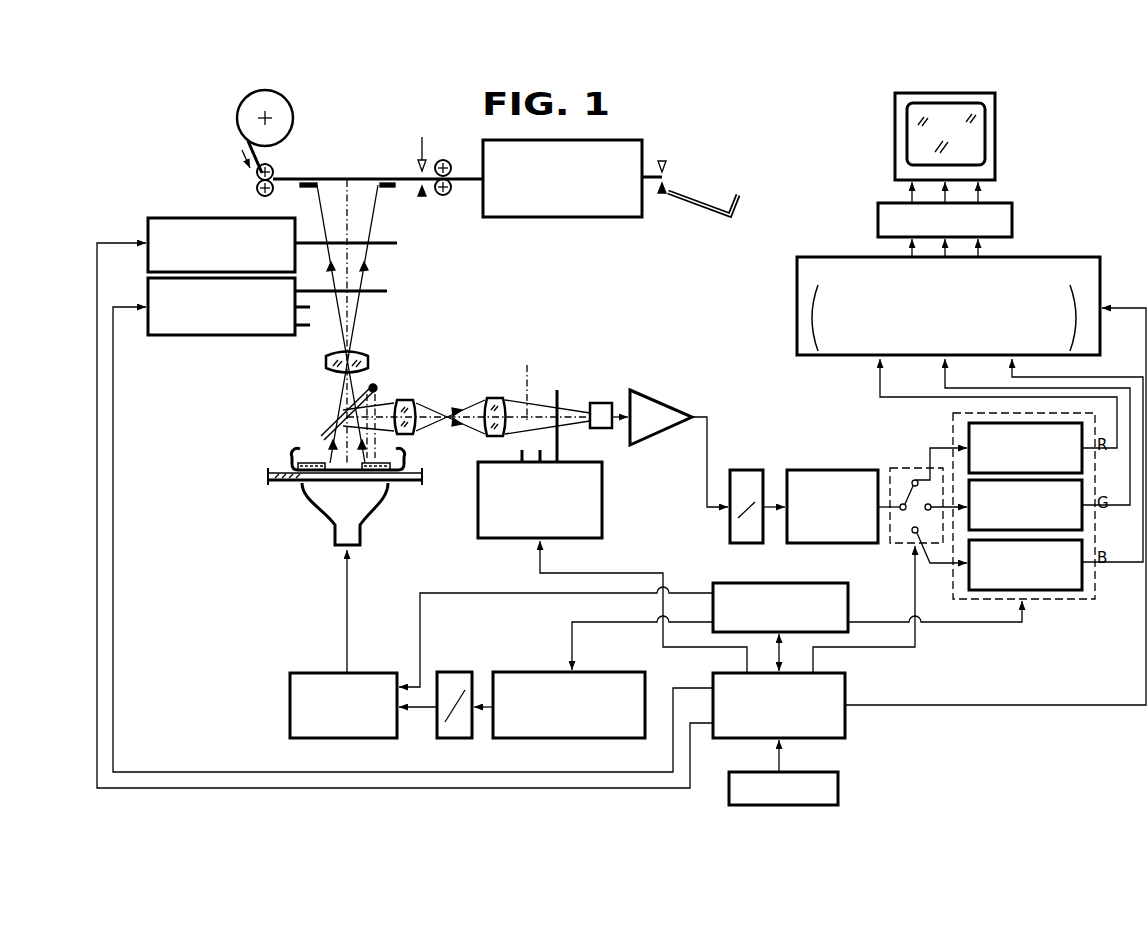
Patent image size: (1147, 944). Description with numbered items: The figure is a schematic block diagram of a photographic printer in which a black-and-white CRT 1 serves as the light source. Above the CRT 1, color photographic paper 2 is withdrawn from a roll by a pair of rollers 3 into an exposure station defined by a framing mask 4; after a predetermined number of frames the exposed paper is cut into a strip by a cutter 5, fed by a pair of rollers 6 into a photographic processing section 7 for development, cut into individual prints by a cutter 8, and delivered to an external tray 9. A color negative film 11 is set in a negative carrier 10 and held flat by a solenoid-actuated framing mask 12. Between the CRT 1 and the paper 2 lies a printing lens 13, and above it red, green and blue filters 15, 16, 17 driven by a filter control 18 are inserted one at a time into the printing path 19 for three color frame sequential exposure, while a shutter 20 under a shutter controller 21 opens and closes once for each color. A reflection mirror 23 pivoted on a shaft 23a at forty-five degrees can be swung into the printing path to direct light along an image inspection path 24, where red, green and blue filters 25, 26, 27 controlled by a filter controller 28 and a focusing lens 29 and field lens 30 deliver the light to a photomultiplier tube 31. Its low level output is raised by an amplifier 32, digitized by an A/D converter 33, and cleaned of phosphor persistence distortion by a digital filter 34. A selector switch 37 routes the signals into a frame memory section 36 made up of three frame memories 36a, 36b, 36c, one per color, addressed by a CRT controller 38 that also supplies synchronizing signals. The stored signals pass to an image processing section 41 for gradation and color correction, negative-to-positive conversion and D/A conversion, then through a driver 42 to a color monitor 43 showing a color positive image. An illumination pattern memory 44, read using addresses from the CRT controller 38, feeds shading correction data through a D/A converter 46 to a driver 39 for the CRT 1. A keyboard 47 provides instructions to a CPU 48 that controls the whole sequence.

The black-and-white CRT 1 is at (380, 498).
The color photographic paper 2 is at (243, 149).
The pair of rollers 3 is at (276, 168).
The framing mask 4 is at (387, 182).
The cutter 5 is at (422, 156).
The pair of rollers 6 is at (443, 160).
The photographic processing section 7 is at (562, 217).
The cutter 8 is at (663, 158).
The external tray 9 is at (693, 207).
The negative carrier 10 is at (271, 485).
The color negative film 11 is at (290, 454).
The framing mask 12 is at (304, 461).
The printing lens 13 is at (368, 360).
The red filter 15 is at (389, 285).
The green filter 16 is at (305, 302).
The blue filter 17 is at (306, 333).
The filter control 18 is at (218, 336).
The printing path 19 is at (355, 205).
The shutter 20 is at (398, 245).
The shutter controller 21 is at (211, 218).
The reflection mirror 23 is at (322, 432).
The shaft 23a is at (378, 386).
The image inspection path 24 is at (527, 383).
The red filter 25 is at (561, 385).
The green filter 26 is at (543, 452).
The blue filter 27 is at (519, 453).
The filter controller 28 is at (603, 494).
The focusing lens 29 is at (413, 433).
The field lens 30 is at (487, 398).
The photomultiplier tube 31 is at (601, 402).
The amplifier 32 is at (653, 398).
The A/D converter 33 is at (745, 470).
The digital filter 34 is at (830, 470).
The frame memory section 36 is at (951, 415).
The frame memory (R) 36a is at (967, 434).
The frame memory (G) 36b is at (1083, 515).
The frame memory (B) 36c is at (1058, 591).
The selector switch 37 is at (895, 468).
The CRT controller 38 is at (781, 582).
The driver 39 is at (316, 673).
The image processing section 41 is at (830, 256).
The driver 42 is at (1013, 220).
The color monitor 43 is at (996, 138).
The illumination pattern memory 44 is at (535, 672).
The D/A converter 46 is at (455, 672).
The keyboard 47 is at (839, 790).
The CPU 48 is at (846, 690).